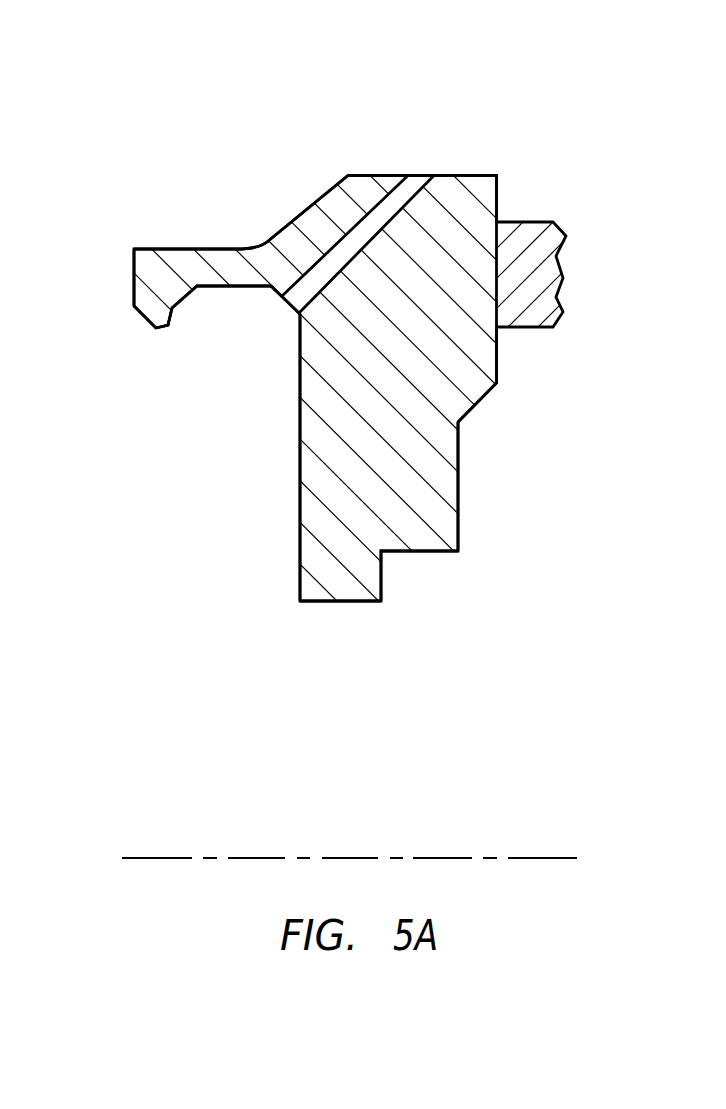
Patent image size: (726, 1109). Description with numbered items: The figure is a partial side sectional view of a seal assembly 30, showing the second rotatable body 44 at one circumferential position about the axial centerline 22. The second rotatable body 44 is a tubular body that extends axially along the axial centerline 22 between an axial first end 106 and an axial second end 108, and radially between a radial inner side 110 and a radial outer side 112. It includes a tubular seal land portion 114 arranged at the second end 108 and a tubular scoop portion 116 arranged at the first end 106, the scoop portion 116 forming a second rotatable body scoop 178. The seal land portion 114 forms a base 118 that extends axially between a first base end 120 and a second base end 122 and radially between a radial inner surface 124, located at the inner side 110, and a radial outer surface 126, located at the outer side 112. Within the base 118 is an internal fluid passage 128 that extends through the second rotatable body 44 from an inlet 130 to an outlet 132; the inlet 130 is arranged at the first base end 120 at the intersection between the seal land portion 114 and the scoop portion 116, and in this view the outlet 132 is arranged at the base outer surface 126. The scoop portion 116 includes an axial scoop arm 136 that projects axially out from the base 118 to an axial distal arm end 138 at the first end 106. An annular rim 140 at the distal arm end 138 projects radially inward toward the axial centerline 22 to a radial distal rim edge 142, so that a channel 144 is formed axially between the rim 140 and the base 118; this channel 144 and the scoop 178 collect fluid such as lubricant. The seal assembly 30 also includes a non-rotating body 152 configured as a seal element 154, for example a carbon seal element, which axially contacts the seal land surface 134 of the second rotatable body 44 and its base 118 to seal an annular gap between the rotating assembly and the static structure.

The seal assembly 30 is at (273, 115).
The scoop portion 116 is at (227, 211).
The axial scoop arm 136 is at (172, 248).
The axial first end 106 is at (83, 246).
The axial distal arm end 138 is at (134, 274).
The annular rim 140 is at (140, 313).
The radial distal rim edge 142 is at (162, 328).
The channel 144 is at (204, 364).
The second rotatable body scoop 178 is at (210, 318).
The inlet 130 is at (291, 306).
The internal fluid passage 128 is at (357, 233).
The second rotatable body 44 is at (353, 164).
The outlet 132 is at (420, 175).
The radial outer side 112 is at (470, 118).
The radial outer surface 126 is at (450, 175).
The axial second end 108 is at (546, 164).
The second base end 122 is at (497, 198).
The non-rotating body 152 is at (542, 246).
The seal element 154 is at (543, 211).
The seal land surface 134 is at (497, 355).
The seal land portion 114 is at (475, 457).
The base 118 is at (435, 515).
The first base end 120 is at (299, 513).
The radial inner side 110 is at (324, 655).
The radial inner surface 124 is at (336, 602).
The axial centerline 22 is at (563, 858).